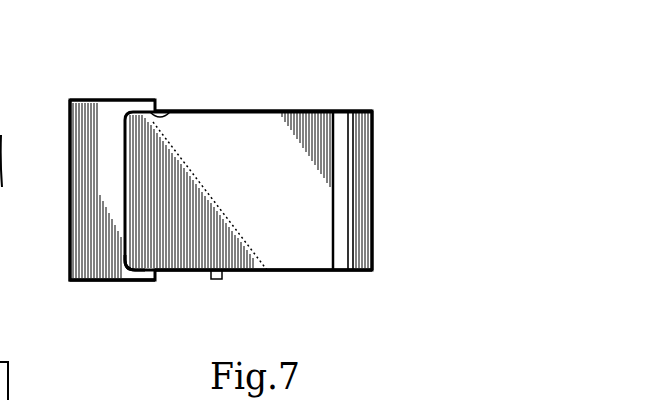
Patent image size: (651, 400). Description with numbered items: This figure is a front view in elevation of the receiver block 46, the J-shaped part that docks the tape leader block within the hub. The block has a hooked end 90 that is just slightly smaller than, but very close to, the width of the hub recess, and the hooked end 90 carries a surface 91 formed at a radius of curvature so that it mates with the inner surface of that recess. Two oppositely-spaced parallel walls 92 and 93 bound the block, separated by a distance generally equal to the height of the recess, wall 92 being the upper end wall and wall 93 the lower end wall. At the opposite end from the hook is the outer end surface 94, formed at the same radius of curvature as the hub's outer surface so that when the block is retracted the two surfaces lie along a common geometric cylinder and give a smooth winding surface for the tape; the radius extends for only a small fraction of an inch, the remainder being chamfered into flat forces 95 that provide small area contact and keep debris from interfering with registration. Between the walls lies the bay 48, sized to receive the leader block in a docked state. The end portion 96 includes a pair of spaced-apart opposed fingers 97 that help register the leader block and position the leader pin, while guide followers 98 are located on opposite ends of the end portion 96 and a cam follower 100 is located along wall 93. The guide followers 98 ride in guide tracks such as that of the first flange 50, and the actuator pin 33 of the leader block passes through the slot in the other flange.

The actuator pin 33 is at (10, 380).
The receiver block 46 is at (292, 79).
The bay 48 is at (249, 165).
The first flange 50 is at (0, 34).
The hooked end 90 is at (333, 205).
The surface 91 is at (360, 177).
The wall 92 is at (205, 111).
The wall 93 is at (278, 271).
The outer end surface 94 is at (70, 214).
The flat forces 95 is at (352, 128).
The end portion 96 is at (117, 197).
The fingers 97 is at (172, 112).
The guide followers 98 is at (121, 100).
The cam follower 100 is at (215, 280).